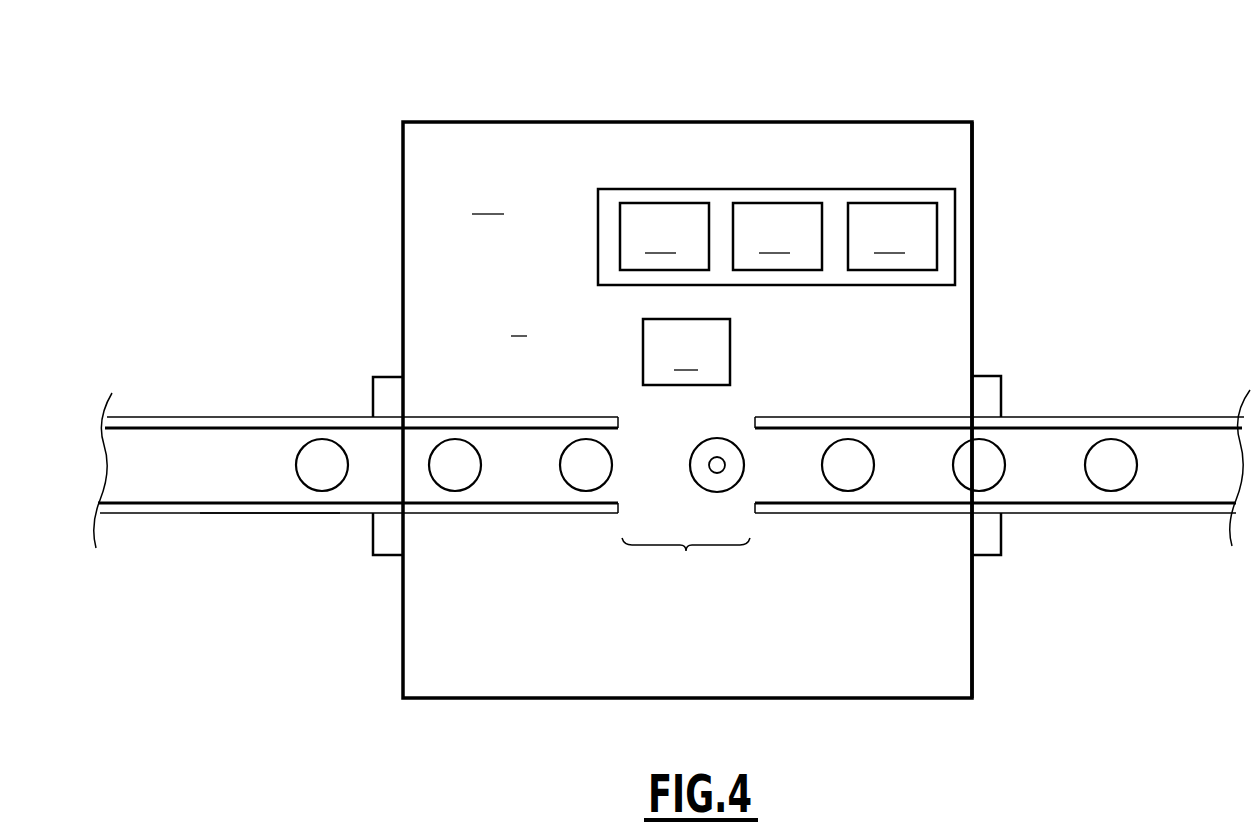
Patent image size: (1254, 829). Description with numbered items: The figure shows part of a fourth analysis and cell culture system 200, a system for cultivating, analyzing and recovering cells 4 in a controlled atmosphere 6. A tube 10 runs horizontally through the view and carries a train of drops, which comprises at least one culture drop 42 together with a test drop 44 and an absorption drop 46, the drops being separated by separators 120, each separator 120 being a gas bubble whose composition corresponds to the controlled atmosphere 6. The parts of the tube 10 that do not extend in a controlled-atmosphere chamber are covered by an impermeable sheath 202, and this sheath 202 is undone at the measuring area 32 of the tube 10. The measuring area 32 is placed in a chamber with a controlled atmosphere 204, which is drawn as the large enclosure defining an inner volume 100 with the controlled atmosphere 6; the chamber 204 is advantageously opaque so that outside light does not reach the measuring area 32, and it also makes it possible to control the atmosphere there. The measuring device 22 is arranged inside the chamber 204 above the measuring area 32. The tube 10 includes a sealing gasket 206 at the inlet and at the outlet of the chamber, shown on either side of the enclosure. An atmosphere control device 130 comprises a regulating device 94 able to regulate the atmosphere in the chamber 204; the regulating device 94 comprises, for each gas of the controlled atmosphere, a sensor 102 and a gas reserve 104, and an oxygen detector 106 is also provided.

The atmosphere control device 130 is at (722, 120).
The chamber with a controlled atmosphere 204 is at (973, 305).
The inner volume 100 is at (488, 196).
The controlled atmosphere 6 is at (519, 318).
The regulating device 94 is at (598, 237).
The sensor 102 is at (664, 236).
The gas reserve 104 is at (777, 236).
The oxygen detector 106 is at (892, 236).
The measuring device 22 is at (686, 352).
The impermeable sheath 202 is at (200, 508).
The tube 10 is at (330, 508).
The sealing gasket 206 is at (385, 385).
The measuring area 32 is at (686, 566).
The separator 120 is at (320, 440).
The absorption drop 46 is at (453, 440).
The test drop 44 is at (588, 440).
The culture drop 42 is at (735, 445).
The cells 4 is at (717, 465).
The fourth analysis and cell culture system 200 is at (312, 712).